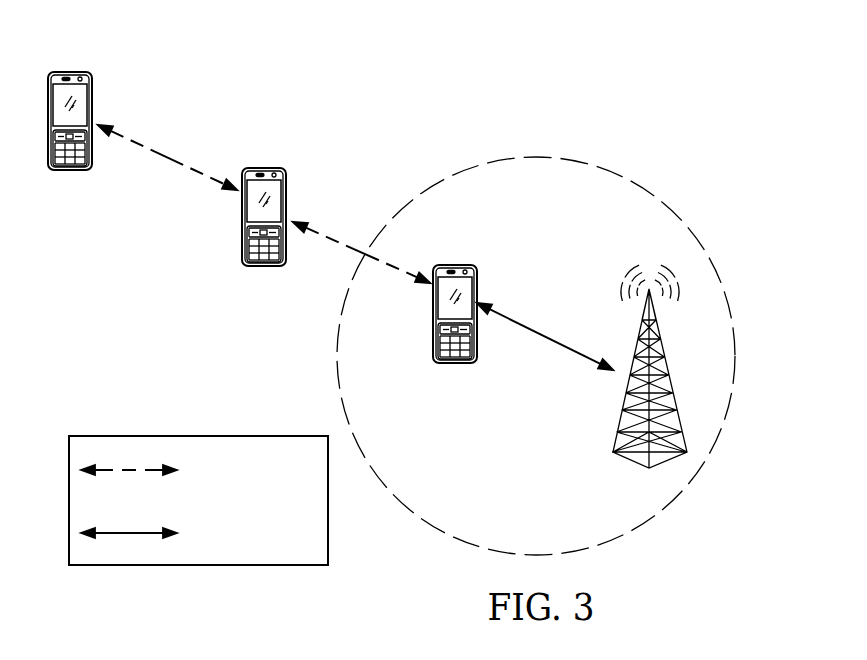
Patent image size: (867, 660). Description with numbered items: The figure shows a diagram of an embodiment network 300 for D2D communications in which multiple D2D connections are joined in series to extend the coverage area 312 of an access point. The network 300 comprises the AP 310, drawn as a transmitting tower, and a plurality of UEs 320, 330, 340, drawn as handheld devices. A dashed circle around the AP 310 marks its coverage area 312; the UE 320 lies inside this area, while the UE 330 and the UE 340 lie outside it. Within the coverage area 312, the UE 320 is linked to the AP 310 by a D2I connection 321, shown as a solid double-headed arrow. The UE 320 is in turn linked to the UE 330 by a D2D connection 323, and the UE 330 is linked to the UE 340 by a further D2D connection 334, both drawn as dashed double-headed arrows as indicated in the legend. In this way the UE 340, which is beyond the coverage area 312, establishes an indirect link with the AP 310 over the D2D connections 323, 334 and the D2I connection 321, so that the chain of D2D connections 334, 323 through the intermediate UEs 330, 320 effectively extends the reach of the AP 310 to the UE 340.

The network 300 is at (622, 100).
The AP 310 is at (633, 458).
The coverage area 312 is at (698, 226).
The UE 320 is at (455, 363).
The D2I connection 321 is at (547, 336).
The D2D connection 323 is at (331, 238).
The UE 330 is at (266, 168).
The D2D connection 334 is at (165, 154).
The UE 340 is at (70, 72).